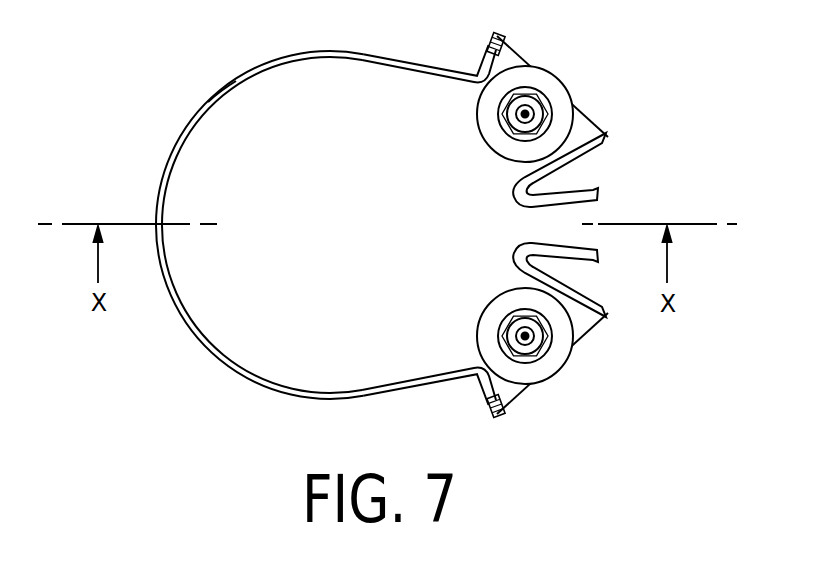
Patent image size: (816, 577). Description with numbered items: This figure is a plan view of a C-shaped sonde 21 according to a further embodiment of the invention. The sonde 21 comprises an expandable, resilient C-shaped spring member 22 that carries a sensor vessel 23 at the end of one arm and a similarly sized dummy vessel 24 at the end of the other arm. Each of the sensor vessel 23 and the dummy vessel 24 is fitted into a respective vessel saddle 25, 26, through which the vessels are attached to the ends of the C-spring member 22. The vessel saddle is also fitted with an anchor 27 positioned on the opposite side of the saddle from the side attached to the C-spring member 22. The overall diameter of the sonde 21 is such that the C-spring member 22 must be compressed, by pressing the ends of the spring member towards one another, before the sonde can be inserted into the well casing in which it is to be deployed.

The sonde 21 is at (210, 366).
The C-shaped spring member 22 is at (208, 102).
The sensor vessel 23 is at (556, 86).
The dummy vessel 24 is at (558, 368).
The vessel saddle 25 is at (590, 128).
The vessel saddle 26 is at (588, 332).
The anchor 27 is at (600, 188).